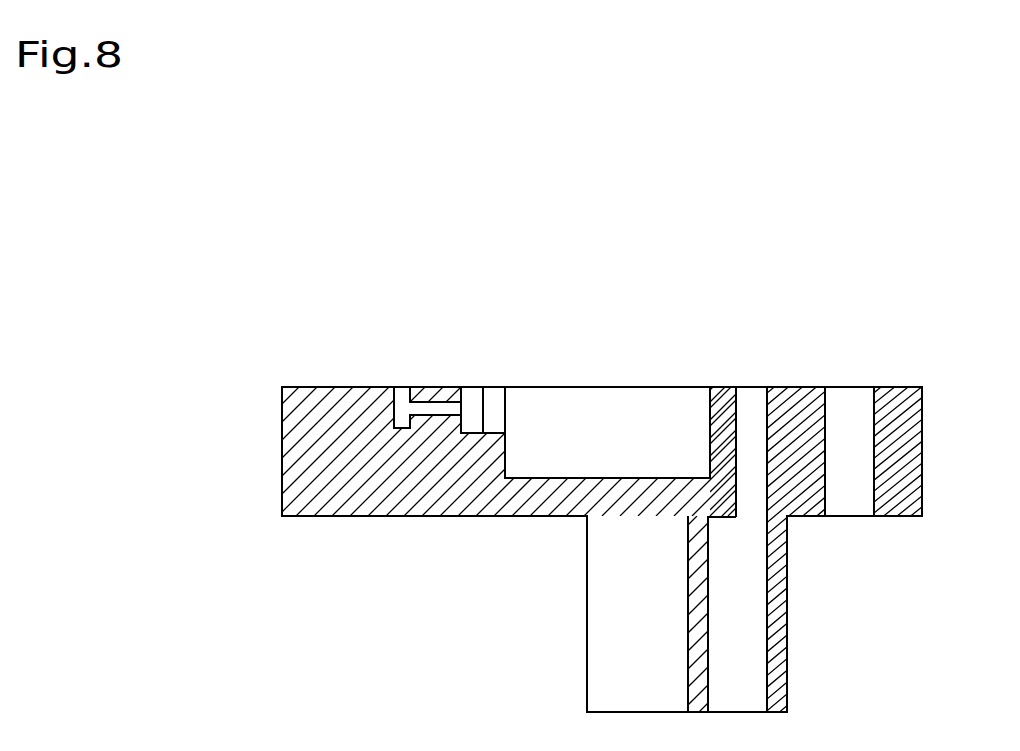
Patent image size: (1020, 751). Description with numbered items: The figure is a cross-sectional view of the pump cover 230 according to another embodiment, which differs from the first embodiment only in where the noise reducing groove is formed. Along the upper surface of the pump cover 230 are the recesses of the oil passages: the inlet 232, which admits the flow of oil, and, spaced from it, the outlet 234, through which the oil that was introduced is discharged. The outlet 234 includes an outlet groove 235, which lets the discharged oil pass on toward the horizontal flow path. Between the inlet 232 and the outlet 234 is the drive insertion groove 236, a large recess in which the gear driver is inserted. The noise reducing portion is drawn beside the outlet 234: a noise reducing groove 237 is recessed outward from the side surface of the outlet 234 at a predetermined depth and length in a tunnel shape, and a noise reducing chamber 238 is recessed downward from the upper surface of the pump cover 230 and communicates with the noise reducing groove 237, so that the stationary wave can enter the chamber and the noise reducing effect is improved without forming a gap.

The pump cover 230 is at (190, 368).
The inlet 232 is at (753, 398).
The outlet 234 is at (472, 385).
The outlet groove 235 is at (498, 385).
The drive insertion groove 236 is at (600, 420).
The noise reducing groove 237 is at (448, 385).
The noise reducing chamber 238 is at (400, 385).